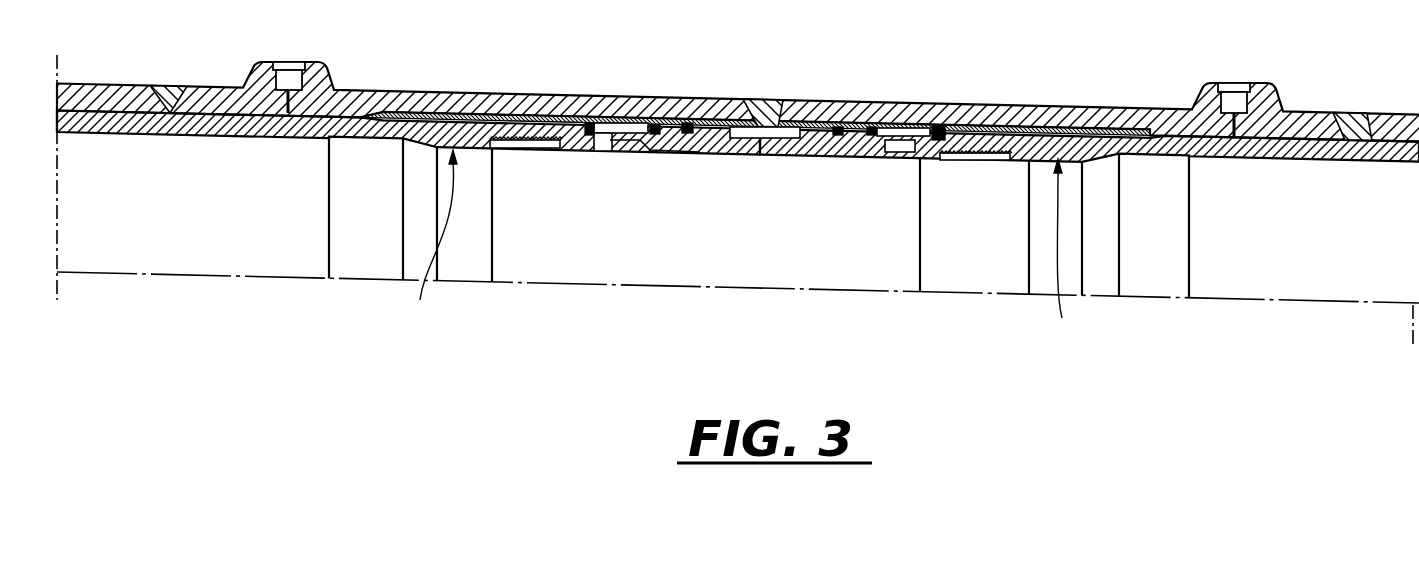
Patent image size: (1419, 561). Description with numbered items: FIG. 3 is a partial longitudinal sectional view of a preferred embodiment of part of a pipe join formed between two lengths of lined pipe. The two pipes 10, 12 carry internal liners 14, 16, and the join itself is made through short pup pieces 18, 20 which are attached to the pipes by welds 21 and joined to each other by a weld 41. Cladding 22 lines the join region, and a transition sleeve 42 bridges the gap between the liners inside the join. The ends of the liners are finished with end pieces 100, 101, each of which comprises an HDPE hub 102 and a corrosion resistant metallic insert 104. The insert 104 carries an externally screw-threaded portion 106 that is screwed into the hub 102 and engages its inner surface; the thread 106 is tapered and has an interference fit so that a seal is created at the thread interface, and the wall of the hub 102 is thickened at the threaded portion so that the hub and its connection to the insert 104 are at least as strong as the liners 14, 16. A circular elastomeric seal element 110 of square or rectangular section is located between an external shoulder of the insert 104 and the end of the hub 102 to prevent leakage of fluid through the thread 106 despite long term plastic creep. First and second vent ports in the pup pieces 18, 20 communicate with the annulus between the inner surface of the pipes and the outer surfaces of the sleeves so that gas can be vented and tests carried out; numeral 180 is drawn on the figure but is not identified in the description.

The pipe 10 is at (128, 86).
The pipe 12 is at (1390, 113).
The liner 14 is at (213, 133).
The liner 16 is at (1260, 152).
The pup piece 18 is at (607, 97).
The pup piece 20 is at (875, 100).
The weld 21 is at (168, 86).
The cladding 22 is at (462, 91).
The weld 41 is at (760, 98).
The transition sleeve 42 is at (663, 132).
The end piece 100 is at (1074, 249).
The end piece 101 is at (426, 236).
The HDPE hub 102 is at (477, 150).
The corrosion resistant metallic insert 104 is at (548, 148).
The externally screw-threaded portion 106 is at (530, 147).
The circular elastomeric seal element 110 is at (597, 137).
The bolt 180 is at (328, 72).